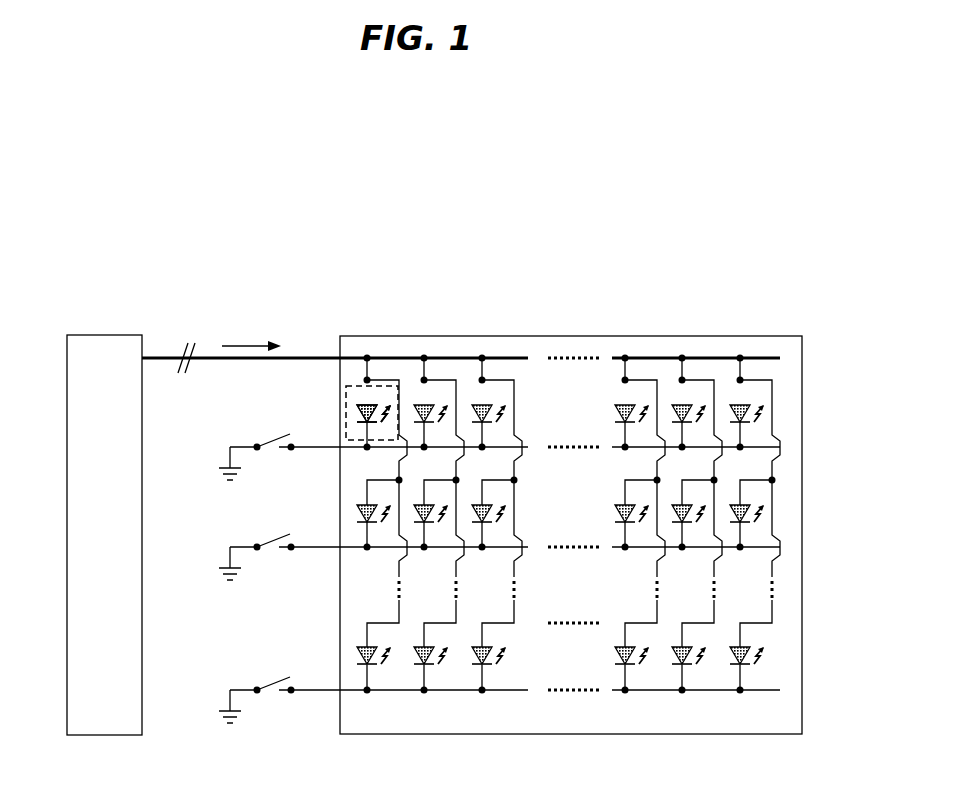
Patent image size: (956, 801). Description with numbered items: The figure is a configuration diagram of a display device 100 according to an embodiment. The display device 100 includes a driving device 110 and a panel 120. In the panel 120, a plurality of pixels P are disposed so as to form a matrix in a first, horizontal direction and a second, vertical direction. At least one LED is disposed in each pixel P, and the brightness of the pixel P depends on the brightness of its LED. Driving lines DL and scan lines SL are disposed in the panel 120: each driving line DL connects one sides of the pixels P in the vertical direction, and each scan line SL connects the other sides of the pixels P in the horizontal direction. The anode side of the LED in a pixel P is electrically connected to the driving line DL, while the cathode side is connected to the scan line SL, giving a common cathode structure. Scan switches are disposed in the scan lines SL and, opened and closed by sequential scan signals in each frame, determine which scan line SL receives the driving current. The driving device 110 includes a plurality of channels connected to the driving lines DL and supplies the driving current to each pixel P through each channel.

The display device 100 is at (150, 177).
The driving device 110 is at (131, 335).
The panel 120 is at (778, 335).
The pixel P is at (348, 384).
The driving line DL is at (395, 373).
The scan line SL is at (527, 445).
The light emitting diode LED is at (353, 404).